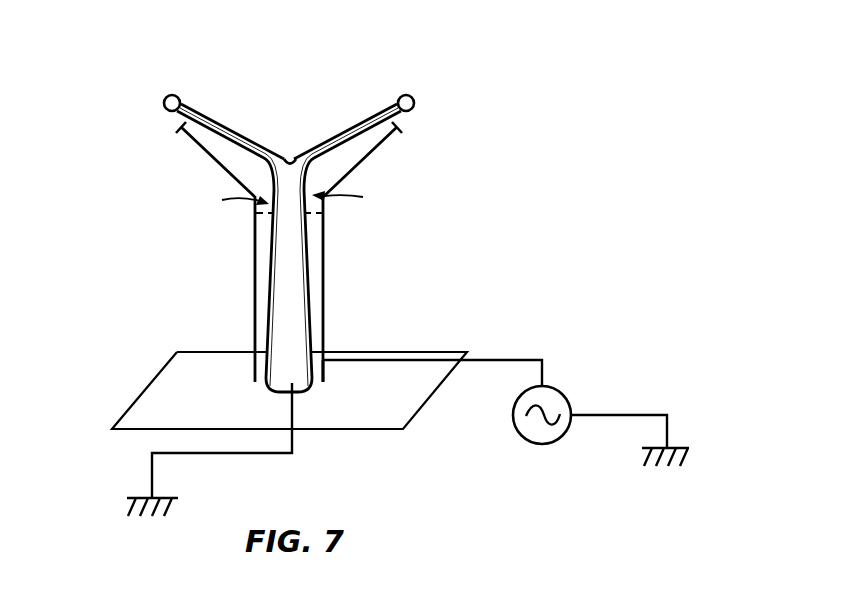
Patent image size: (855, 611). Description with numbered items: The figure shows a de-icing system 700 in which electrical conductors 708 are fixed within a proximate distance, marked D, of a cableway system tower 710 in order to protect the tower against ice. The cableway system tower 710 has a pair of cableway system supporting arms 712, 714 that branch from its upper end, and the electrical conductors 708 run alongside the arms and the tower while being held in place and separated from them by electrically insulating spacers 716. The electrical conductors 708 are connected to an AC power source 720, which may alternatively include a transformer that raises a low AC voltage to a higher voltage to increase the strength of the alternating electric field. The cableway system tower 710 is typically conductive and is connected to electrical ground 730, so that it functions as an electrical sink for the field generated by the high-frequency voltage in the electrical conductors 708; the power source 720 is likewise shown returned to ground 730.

The system 700 is at (100, 85).
The electrical conductors 708 is at (255, 242).
The cableway system tower 710 is at (297, 162).
The cableway system supporting arm 712 is at (205, 118).
The cableway system supporting arm 714 is at (368, 118).
The electrically insulating spacers 716 is at (410, 119).
The AC power source 720 is at (512, 418).
The electrical ground 730 is at (683, 447).